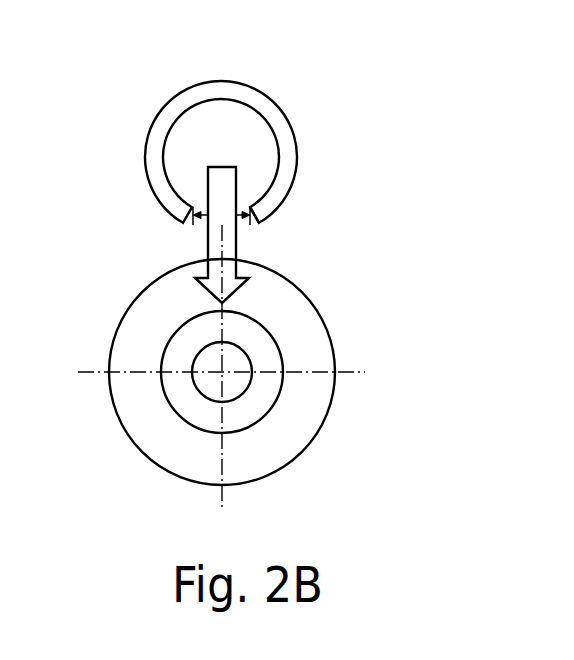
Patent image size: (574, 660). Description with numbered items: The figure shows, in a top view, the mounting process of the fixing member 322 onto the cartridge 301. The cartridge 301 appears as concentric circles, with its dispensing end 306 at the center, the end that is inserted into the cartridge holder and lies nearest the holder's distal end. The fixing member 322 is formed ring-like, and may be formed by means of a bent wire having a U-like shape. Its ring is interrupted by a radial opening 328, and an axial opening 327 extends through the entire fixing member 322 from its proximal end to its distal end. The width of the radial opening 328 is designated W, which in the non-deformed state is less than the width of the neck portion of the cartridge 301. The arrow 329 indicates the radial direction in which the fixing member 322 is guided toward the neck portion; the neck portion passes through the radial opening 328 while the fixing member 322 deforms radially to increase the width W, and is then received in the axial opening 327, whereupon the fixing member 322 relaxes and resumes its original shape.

The cartridge 301 is at (273, 452).
The dispensing end 306 is at (233, 378).
The fixing member 322 is at (240, 97).
The axial opening 327 is at (217, 122).
The radial opening 328 is at (246, 207).
The arrow 329 is at (230, 238).
The width of the radial opening W is at (207, 222).